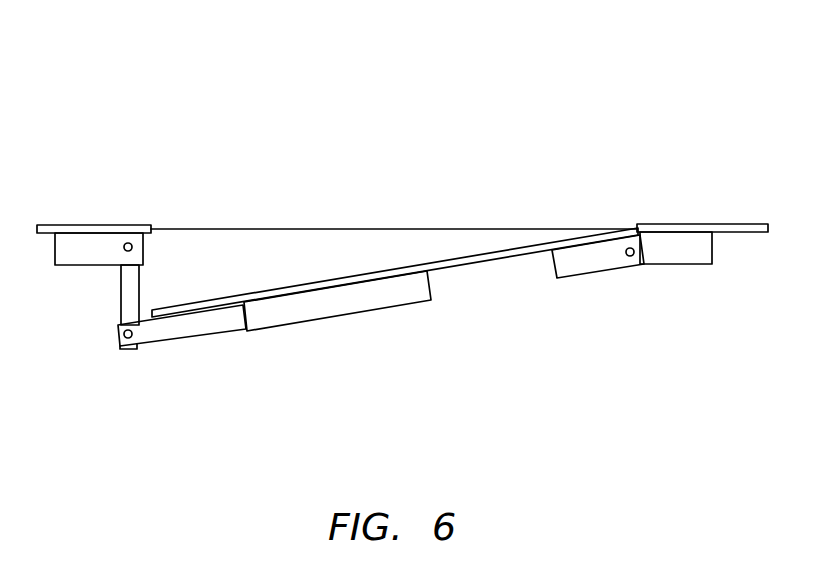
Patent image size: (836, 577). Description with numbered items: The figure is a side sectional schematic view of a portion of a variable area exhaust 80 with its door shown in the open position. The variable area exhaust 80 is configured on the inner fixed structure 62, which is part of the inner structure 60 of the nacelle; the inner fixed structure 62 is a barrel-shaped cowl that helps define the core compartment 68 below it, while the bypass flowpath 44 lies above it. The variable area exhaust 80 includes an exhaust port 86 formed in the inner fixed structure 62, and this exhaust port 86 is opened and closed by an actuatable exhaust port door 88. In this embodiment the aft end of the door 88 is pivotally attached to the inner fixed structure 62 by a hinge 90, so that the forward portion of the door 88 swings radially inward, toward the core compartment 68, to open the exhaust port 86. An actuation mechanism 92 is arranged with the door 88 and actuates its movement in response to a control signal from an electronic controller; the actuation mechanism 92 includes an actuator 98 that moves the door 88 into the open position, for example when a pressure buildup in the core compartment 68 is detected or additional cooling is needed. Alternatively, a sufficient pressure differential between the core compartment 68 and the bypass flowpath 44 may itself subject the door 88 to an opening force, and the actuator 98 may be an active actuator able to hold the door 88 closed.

The inner structure 60 is at (630, 87).
The bypass flowpath 44 is at (394, 189).
The inner fixed structure 62 is at (61, 228).
The core compartment 68 is at (340, 378).
The variable area exhaust 80 is at (104, 310).
The exhaust port 86 is at (187, 229).
The exhaust port door 88 is at (457, 268).
The hinge 90 is at (623, 268).
The actuation mechanism 92 is at (148, 373).
The actuator 98 is at (195, 336).